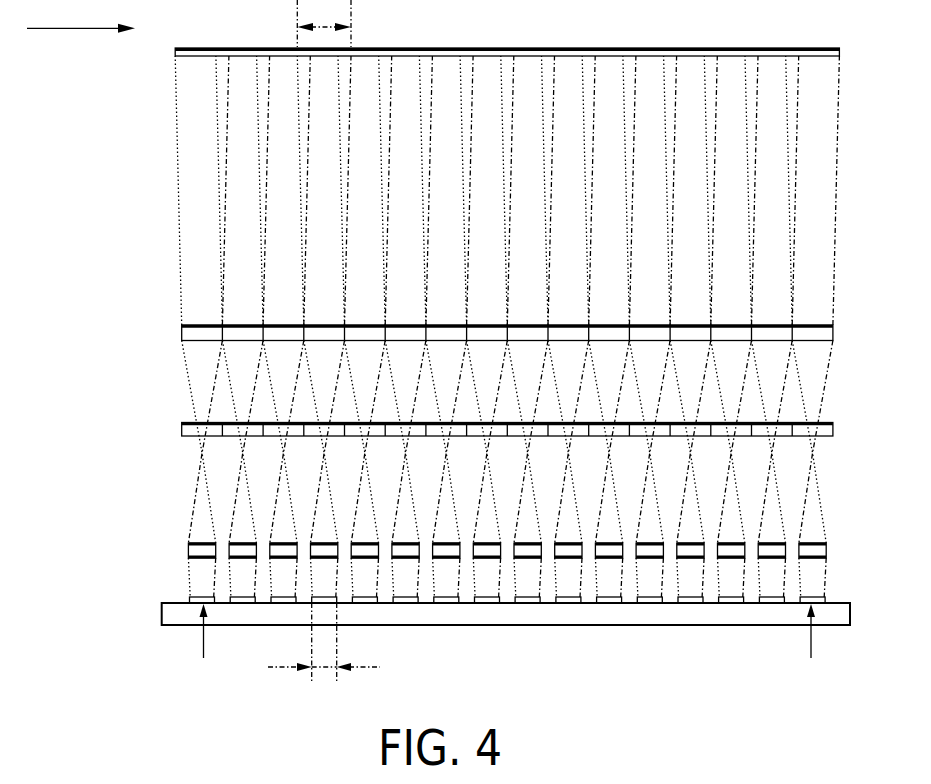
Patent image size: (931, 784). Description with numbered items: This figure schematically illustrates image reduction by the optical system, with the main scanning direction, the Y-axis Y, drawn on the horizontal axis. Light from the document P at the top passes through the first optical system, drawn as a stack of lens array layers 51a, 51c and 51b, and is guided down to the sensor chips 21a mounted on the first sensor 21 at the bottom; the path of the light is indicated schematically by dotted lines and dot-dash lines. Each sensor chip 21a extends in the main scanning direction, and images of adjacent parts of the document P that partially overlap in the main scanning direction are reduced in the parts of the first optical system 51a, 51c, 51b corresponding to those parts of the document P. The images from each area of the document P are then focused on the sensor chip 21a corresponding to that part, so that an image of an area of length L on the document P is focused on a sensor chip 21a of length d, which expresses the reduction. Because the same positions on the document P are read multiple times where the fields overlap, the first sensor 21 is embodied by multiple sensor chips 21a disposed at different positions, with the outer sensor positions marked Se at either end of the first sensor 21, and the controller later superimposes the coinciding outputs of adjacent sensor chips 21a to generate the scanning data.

The document P is at (507, 37).
The first lens array 51a is at (449, 349).
The third lens array (aperture array) 51c is at (449, 448).
The second lens array 51b is at (445, 533).
The sensor chip 21a is at (445, 590).
The first sensor 21 is at (476, 640).
The sensor end positions Se is at (505, 642).
The length of document area L is at (324, 23).
The length of sensor chip d is at (324, 646).
The main scanning direction axis Y is at (81, 39).